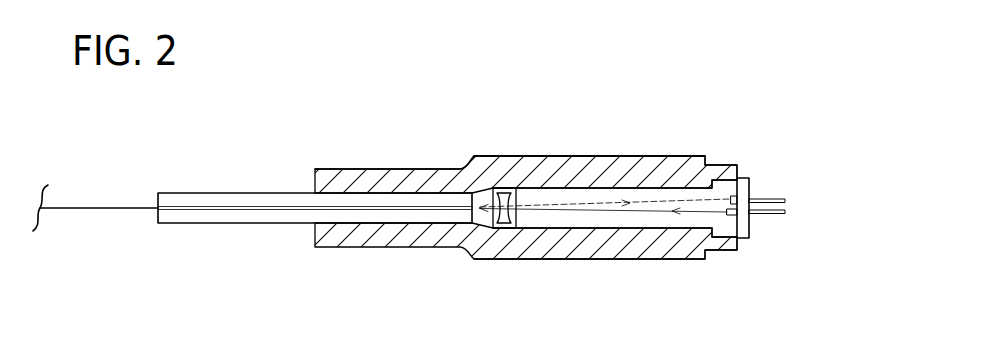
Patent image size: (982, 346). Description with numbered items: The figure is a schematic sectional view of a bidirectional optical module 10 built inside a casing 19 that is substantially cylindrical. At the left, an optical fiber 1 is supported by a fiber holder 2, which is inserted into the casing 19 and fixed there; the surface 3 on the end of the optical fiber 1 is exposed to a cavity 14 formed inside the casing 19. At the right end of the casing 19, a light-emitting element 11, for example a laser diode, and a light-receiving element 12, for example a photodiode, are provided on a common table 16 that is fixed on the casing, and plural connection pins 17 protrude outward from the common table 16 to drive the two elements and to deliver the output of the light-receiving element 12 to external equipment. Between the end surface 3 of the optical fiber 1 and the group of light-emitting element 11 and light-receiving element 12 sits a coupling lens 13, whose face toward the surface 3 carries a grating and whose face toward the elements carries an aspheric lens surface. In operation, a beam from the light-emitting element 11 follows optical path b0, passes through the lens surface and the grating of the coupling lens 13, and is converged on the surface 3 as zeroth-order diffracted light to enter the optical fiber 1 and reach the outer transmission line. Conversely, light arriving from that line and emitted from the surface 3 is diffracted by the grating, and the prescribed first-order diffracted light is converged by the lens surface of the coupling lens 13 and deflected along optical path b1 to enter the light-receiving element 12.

The optical fiber 1 is at (84, 207).
The fiber holder 2 is at (209, 190).
The surface on an end of the optical fiber 3 is at (484, 226).
The bidirectional optical module 10 is at (514, 137).
The light-emitting element 11 is at (725, 251).
The light-receiving element 12 is at (739, 196).
The coupling lens 13 is at (502, 229).
The cavity 14 is at (622, 229).
The common table 16 is at (747, 229).
The connection pins 17 is at (789, 201).
The casing 19 is at (628, 156).
The optical path b0 is at (674, 216).
The optical path b1 is at (676, 197).